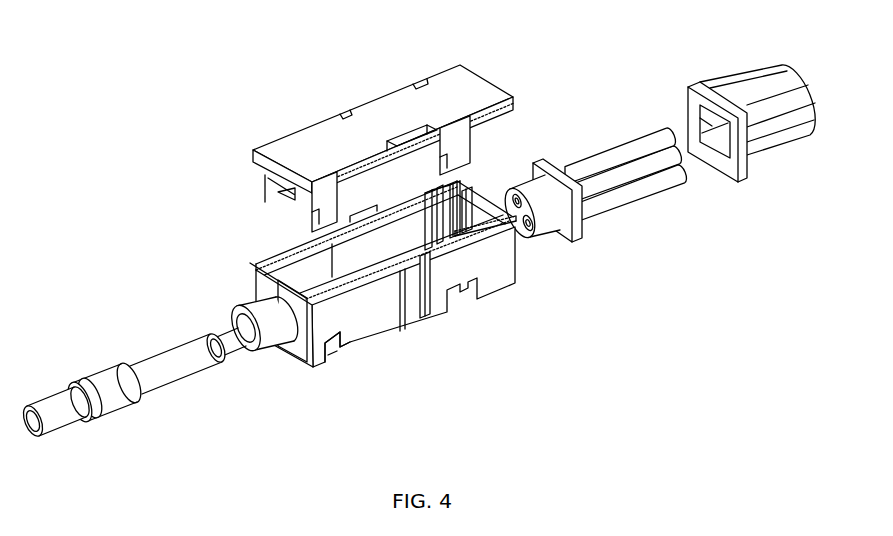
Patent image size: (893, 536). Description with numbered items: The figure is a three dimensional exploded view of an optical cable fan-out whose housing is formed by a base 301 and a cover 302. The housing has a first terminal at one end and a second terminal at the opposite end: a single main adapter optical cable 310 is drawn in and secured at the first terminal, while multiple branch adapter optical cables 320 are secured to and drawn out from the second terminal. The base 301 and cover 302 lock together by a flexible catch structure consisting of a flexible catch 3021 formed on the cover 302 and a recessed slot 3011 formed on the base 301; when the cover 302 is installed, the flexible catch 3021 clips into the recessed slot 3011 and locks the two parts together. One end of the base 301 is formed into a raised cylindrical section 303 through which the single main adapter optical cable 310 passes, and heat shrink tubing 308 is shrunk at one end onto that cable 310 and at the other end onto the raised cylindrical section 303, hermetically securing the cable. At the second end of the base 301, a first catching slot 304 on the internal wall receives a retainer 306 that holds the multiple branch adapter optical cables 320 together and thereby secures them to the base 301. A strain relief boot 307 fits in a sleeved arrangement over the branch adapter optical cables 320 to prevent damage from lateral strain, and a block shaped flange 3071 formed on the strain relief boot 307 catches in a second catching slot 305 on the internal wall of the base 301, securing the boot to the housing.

The base 301 is at (407, 296).
The recessed slot 3011 is at (333, 353).
The cover 302 is at (373, 122).
The flexible catch 3021 is at (312, 212).
The raised cylindrical section 303 is at (250, 305).
The first catching slot 304 is at (432, 201).
The second catching slot 305 is at (488, 218).
The retainer 306 is at (548, 163).
The strain relief boot 307 is at (780, 132).
The block shaped flange 3071 is at (697, 85).
The heat shrink tubing 308 is at (93, 371).
The single main adapter optical cable 310 is at (177, 347).
The multiple branch adapter optical cables 320 is at (630, 193).